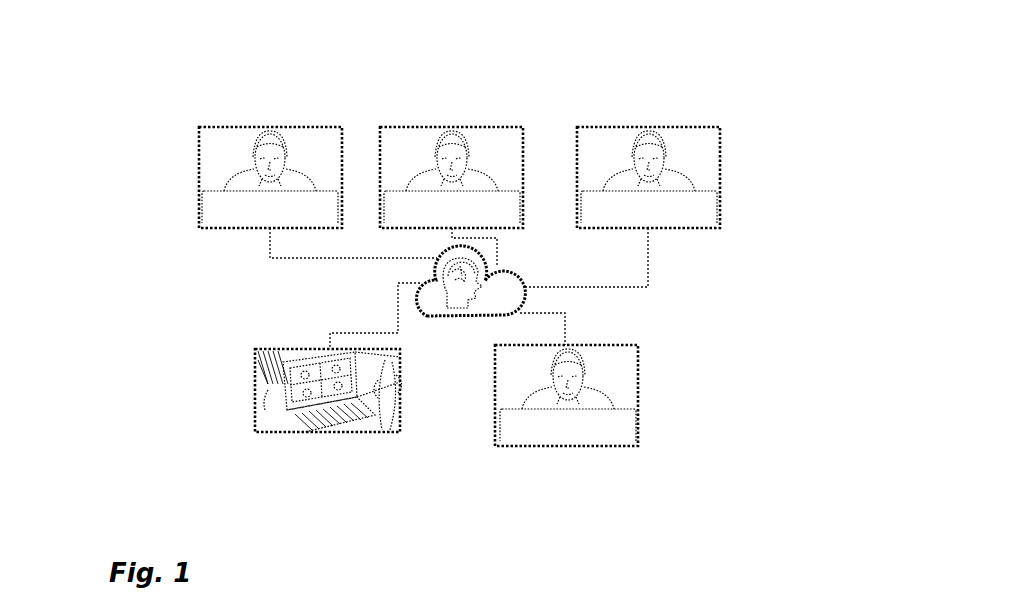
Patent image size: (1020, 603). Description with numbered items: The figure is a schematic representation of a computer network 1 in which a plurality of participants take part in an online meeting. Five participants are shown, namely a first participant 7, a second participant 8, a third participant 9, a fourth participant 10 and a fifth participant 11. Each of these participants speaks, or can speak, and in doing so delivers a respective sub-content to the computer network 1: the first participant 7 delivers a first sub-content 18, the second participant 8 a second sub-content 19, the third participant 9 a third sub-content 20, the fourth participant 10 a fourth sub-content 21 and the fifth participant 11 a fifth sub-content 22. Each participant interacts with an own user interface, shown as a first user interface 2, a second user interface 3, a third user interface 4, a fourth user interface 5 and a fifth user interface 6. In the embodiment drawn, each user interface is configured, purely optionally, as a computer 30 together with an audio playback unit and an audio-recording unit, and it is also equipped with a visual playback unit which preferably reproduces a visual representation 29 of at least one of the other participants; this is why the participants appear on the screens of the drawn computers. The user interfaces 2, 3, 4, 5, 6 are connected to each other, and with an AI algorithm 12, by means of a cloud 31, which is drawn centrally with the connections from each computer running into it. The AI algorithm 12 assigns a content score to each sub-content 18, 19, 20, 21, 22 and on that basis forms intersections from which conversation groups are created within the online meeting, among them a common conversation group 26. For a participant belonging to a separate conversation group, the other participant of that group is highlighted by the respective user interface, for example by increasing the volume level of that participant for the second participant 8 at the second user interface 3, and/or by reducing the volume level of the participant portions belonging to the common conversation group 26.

The computer network 1 is at (744, 43).
The first user interface 2 is at (245, 153).
The second user interface 3 is at (374, 155).
The third user interface 4 is at (667, 166).
The fourth user interface 5 is at (682, 408).
The fifth user interface 6 is at (278, 404).
The first participant 7 is at (245, 153).
The second participant 8 is at (374, 155).
The third participant 9 is at (667, 166).
The fourth participant 10 is at (682, 408).
The fifth participant 11 is at (278, 404).
The AI algorithm 12 is at (465, 286).
The first sub-content 18 is at (277, 137).
The second sub-content 19 is at (445, 208).
The third sub-content 20 is at (655, 137).
The fourth sub-content 21 is at (632, 412).
The fifth sub-content 22 is at (278, 404).
The common conversation group 26 is at (278, 404).
The visual representation 29 is at (302, 362).
The computer 30 is at (461, 286).
The cloud 31 is at (440, 283).